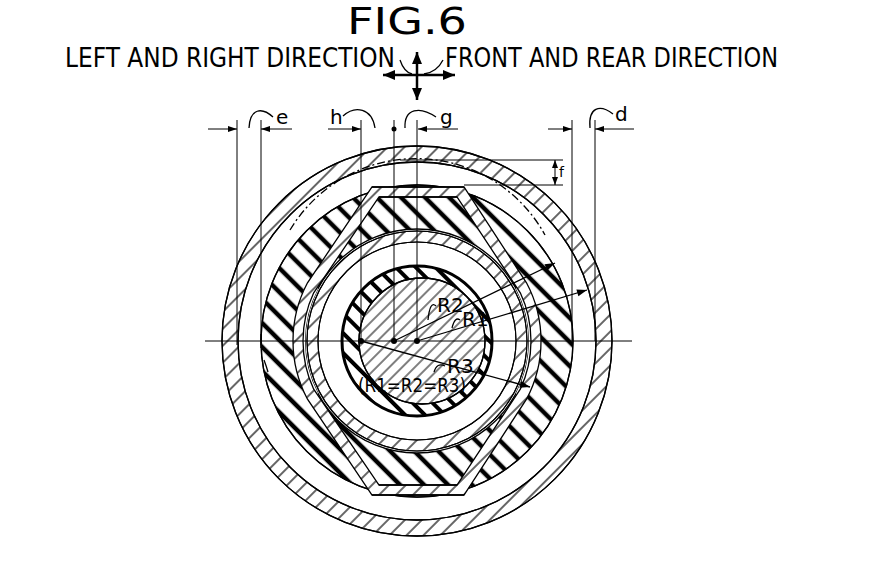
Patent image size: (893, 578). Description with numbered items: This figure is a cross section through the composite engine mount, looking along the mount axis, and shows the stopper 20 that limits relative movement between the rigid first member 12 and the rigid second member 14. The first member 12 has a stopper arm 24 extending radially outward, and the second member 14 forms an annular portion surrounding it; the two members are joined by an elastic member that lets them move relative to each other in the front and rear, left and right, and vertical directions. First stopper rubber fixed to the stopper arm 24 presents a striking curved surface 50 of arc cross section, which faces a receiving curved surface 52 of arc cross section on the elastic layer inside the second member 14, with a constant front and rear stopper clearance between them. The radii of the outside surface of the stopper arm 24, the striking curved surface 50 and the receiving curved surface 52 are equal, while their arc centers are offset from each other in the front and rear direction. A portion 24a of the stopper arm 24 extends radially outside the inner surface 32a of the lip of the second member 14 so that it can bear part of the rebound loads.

The first member 12 is at (447, 398).
The second member 14 is at (598, 397).
The stopper 20 is at (580, 360).
The stopper arm 24 is at (540, 323).
The portion of stopper arm 24a is at (428, 190).
The inner surface of lip 32a is at (447, 198).
The striking curved surface 50 is at (255, 367).
The receiving curved surface 52 is at (246, 353).